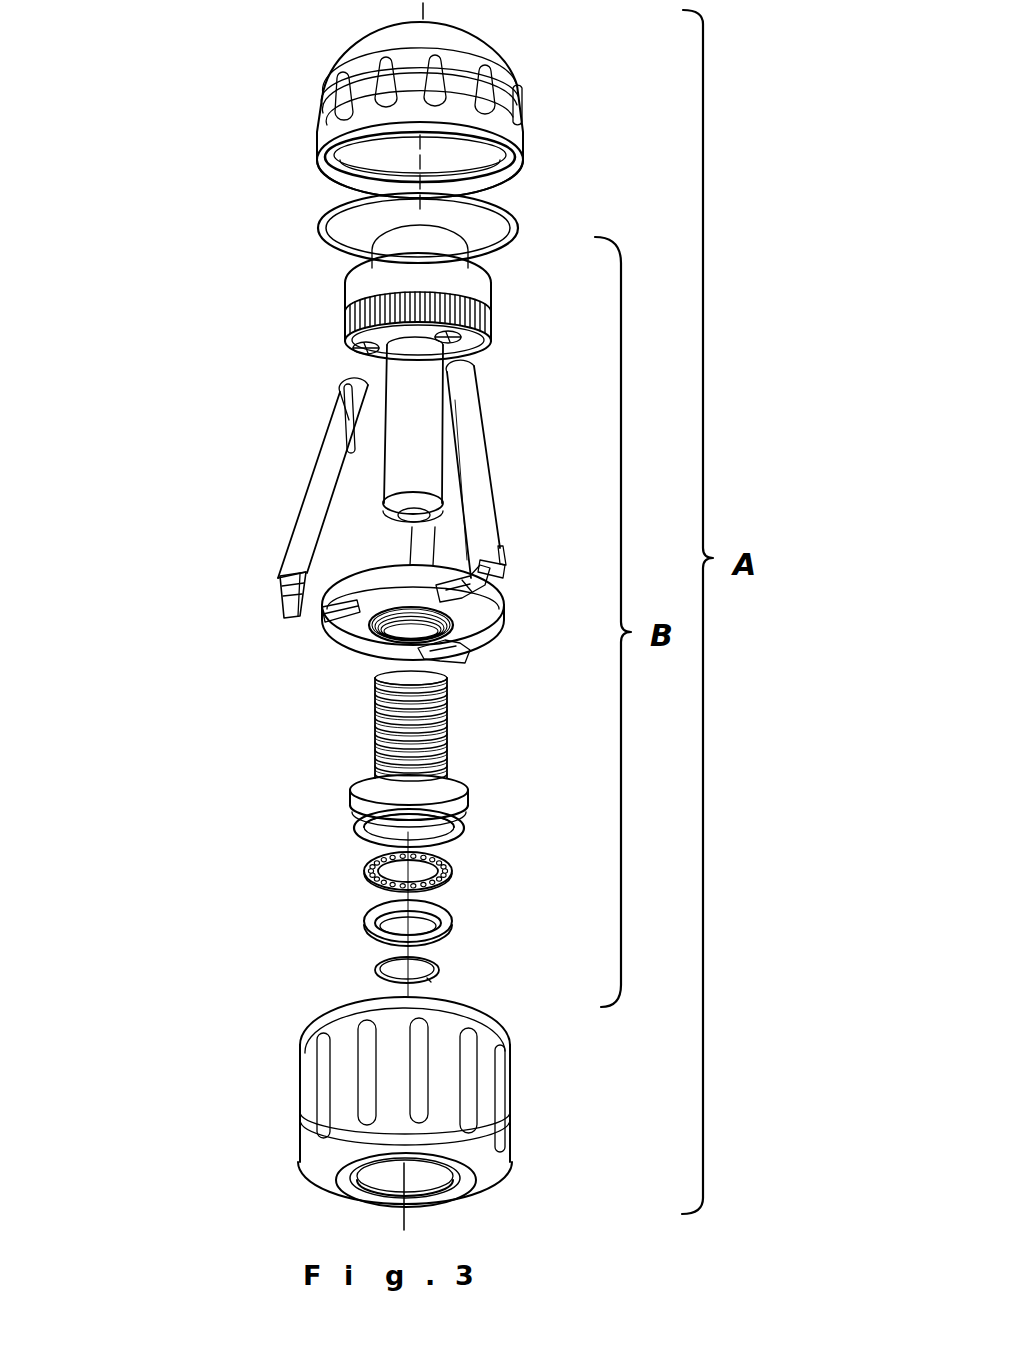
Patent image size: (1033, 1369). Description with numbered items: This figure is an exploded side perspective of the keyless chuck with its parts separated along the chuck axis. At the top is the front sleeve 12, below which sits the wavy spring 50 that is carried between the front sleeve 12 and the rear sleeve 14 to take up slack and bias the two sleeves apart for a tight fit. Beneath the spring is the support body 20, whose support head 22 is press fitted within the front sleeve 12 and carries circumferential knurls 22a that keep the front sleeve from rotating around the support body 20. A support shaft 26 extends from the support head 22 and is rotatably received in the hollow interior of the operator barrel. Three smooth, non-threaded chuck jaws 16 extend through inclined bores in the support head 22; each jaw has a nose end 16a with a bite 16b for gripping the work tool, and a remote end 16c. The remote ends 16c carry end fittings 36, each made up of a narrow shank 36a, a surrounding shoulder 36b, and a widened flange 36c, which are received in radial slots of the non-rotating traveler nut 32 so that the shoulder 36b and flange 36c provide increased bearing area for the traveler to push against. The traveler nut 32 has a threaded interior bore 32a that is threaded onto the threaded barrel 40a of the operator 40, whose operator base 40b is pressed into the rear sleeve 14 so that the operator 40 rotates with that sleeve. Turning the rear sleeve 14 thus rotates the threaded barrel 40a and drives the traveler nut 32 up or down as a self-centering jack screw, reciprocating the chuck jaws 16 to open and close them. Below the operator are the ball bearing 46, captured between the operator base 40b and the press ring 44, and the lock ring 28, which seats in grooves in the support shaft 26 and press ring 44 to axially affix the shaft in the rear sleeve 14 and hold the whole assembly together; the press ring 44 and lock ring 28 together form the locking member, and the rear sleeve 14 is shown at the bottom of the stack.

The front sleeve 12 is at (518, 143).
The wavy spring 50 is at (500, 221).
The support body 20 is at (390, 294).
The support head 22 is at (347, 291).
The circumferential knurls 22a is at (489, 330).
The support shaft 26 is at (418, 410).
The chuck jaws 16 is at (359, 476).
The nose end 16a is at (338, 397).
The bite 16b is at (357, 391).
The remote end 16c is at (262, 590).
The end fittings 36 is at (352, 604).
The narrow shank 36a is at (275, 587).
The shoulder 36b is at (273, 572).
The widened flange 36c is at (285, 617).
The traveler nut 32 is at (420, 666).
The threaded interior bore 32a is at (453, 648).
The operator 40 is at (470, 765).
The threaded barrel 40a is at (448, 700).
The operator base 40b is at (464, 829).
The ball bearing 46 is at (452, 876).
The press ring 44 is at (453, 923).
The lock ring 28 is at (437, 971).
The rear sleeve 14 is at (485, 1084).